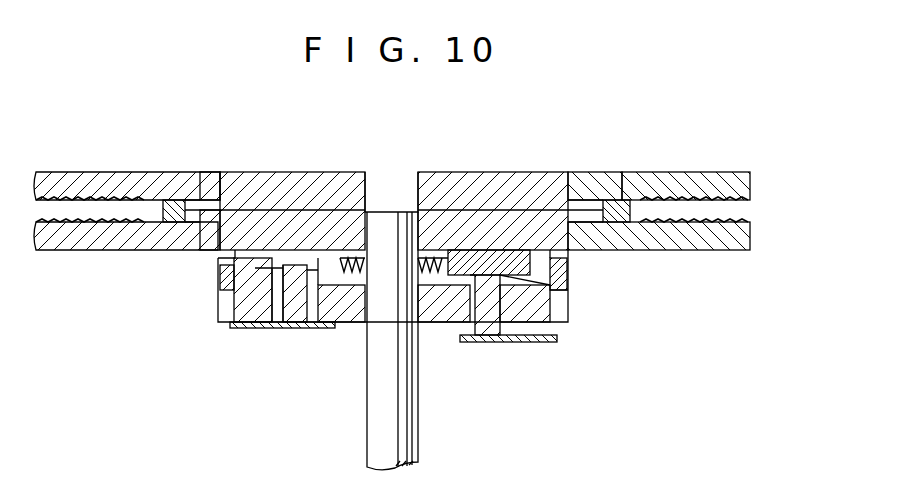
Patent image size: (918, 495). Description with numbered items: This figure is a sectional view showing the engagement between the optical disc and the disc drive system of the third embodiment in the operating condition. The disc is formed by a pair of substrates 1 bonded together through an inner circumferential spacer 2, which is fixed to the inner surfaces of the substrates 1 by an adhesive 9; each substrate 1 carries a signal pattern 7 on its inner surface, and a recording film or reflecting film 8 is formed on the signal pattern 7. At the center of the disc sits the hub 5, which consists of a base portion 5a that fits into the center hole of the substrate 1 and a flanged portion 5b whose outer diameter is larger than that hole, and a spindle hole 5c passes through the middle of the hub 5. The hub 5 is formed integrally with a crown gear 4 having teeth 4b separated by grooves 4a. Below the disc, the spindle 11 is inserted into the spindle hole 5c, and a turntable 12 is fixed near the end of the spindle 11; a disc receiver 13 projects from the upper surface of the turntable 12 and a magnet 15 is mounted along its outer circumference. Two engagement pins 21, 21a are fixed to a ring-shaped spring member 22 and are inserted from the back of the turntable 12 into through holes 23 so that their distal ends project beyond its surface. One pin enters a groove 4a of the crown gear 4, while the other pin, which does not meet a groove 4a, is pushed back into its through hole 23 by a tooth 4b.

The substrate 1 is at (718, 172).
The signal pattern 7 is at (678, 172).
The recording film or reflecting film 8 is at (748, 218).
The hub 5 is at (274, 182).
The base portion 5a is at (236, 185).
The flanged portion 5b is at (192, 205).
The spindle hole 5c is at (400, 185).
The inner circumferential spacer 2 is at (622, 172).
The adhesive 9 is at (608, 200).
The crown gear 4 is at (476, 262).
The groove 4a is at (330, 265).
The tooth 4b is at (500, 255).
The turntable 12 is at (568, 305).
The disc receiver 13 is at (566, 258).
The magnet 15 is at (568, 280).
The through hole 23 is at (275, 300).
The engagement pin 21a is at (295, 330).
The engagement pin 21 is at (490, 342).
The spring member 22 is at (532, 342).
The spindle 11 is at (367, 447).